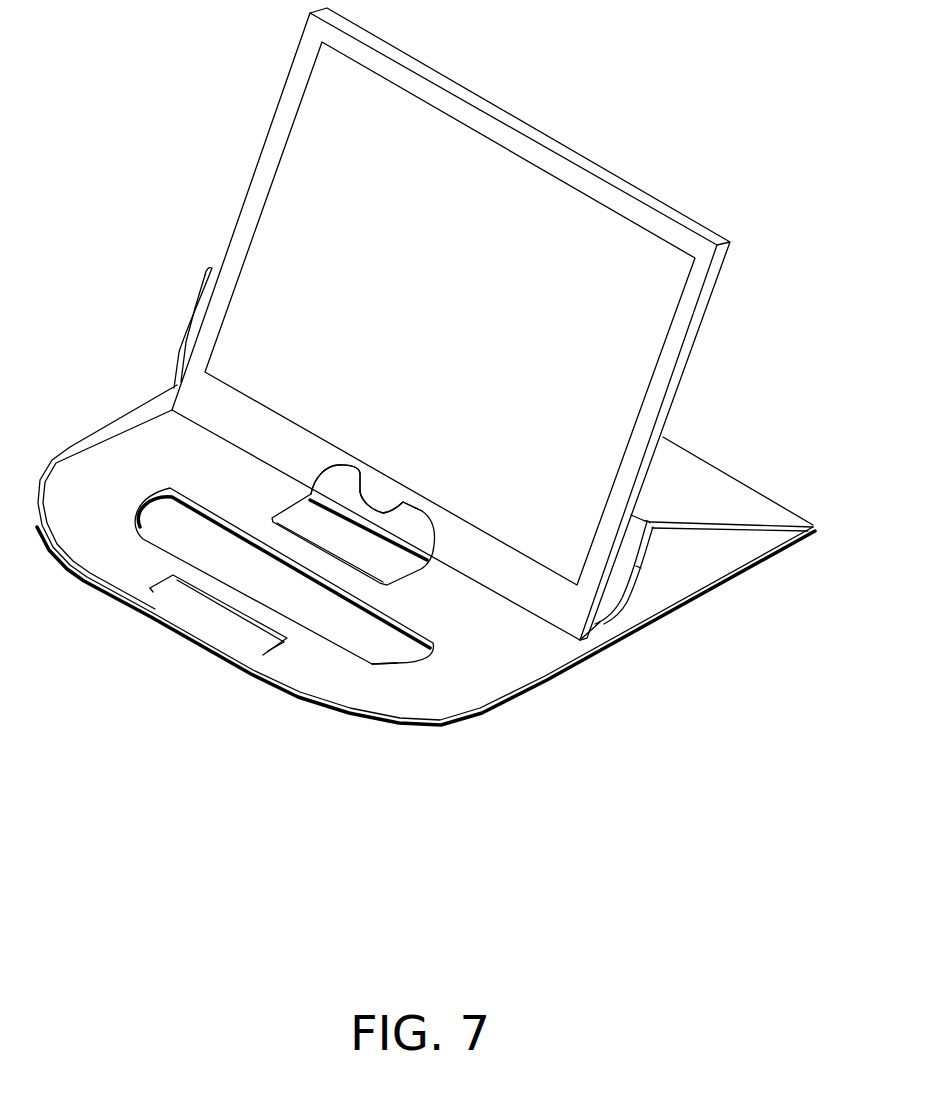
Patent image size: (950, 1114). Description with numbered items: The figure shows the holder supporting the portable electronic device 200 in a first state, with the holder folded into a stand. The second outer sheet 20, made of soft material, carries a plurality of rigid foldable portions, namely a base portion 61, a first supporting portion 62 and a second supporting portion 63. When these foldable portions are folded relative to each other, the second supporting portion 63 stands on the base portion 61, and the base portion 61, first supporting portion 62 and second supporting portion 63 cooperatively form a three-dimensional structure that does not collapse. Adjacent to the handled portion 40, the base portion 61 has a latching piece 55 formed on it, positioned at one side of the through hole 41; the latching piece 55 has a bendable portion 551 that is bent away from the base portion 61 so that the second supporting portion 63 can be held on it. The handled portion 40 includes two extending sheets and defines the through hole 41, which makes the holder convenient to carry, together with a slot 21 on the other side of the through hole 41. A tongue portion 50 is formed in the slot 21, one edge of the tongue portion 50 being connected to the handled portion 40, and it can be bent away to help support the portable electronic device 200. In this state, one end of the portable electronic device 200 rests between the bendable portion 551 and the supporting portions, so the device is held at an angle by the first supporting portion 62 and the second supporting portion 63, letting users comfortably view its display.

The portable electronic device 200 is at (293, 98).
The second outer sheet 20 is at (738, 573).
The slot 21 is at (287, 642).
The handled portion 40 is at (400, 690).
The through hole 41 is at (373, 640).
The tongue portion 50 is at (220, 615).
The latching piece 55 is at (383, 560).
The bendable portion 551 is at (417, 533).
The base portion 61 is at (552, 640).
The first supporting portion 62 is at (723, 498).
The second supporting portion 63 is at (635, 565).